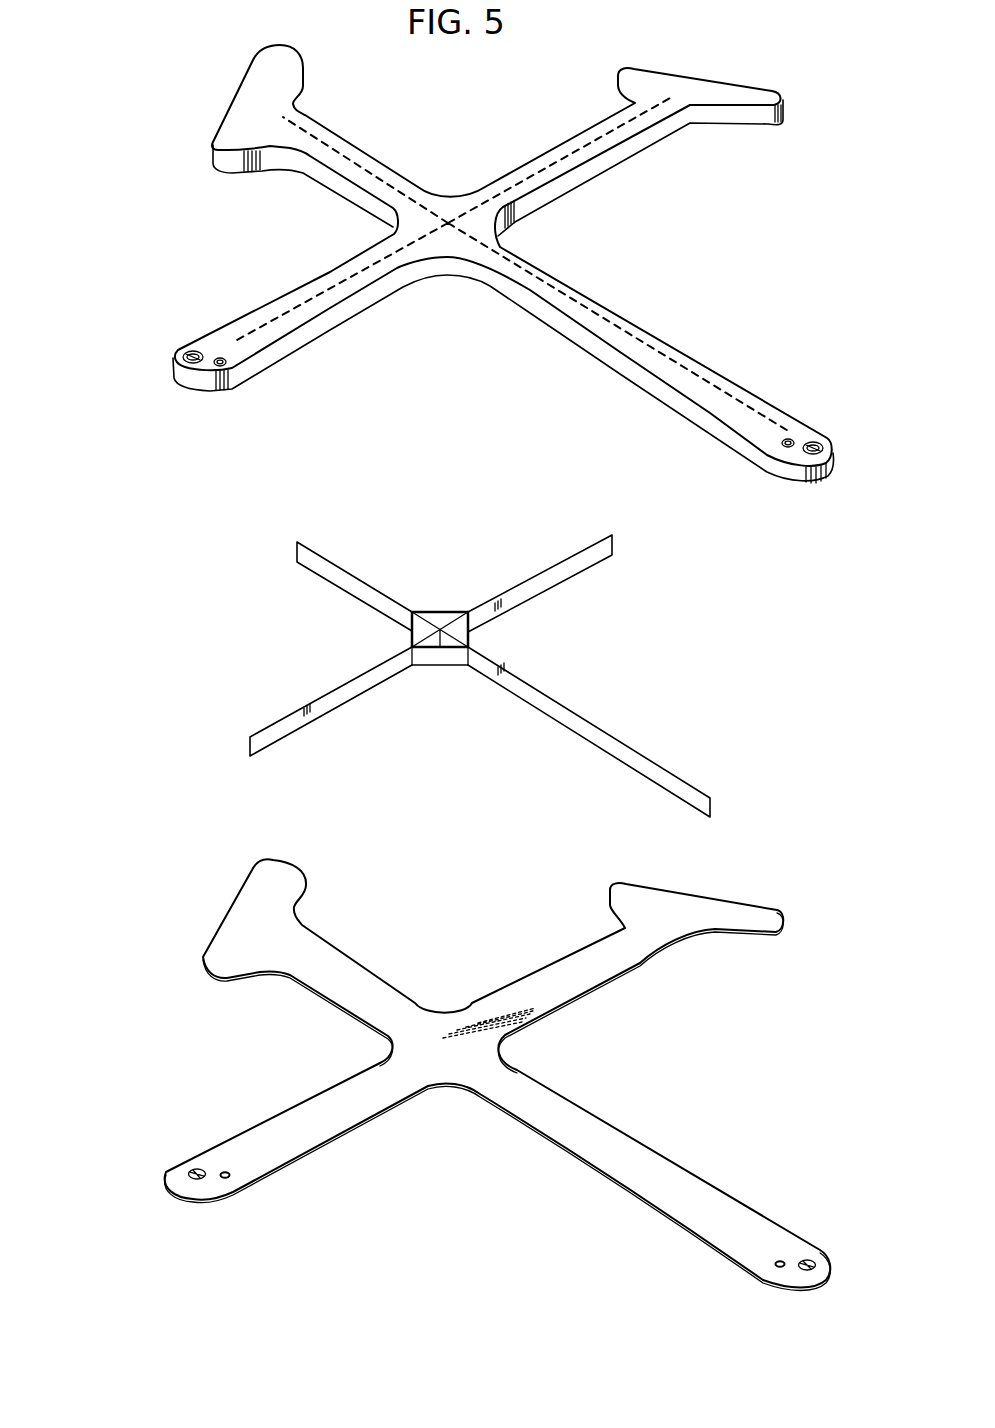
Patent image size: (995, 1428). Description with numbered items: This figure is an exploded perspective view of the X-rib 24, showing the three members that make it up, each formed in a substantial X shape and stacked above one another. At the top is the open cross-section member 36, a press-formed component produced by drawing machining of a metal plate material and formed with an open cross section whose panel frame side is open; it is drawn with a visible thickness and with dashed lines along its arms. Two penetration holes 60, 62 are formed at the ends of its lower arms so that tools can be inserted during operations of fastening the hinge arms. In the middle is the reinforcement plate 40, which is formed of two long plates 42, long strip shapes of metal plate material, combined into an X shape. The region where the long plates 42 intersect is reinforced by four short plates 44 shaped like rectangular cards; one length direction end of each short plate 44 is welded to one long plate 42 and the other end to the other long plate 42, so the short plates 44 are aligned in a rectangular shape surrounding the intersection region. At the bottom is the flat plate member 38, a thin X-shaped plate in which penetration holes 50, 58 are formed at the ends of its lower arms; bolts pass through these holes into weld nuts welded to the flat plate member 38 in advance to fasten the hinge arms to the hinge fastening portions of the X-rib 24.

The X-rib 24 is at (164, 636).
The open cross-section member 36 is at (540, 156).
The flat plate member 38 is at (535, 972).
The reinforcement plate 40 is at (644, 742).
The long plate 42 is at (336, 710).
The short plate 44 is at (445, 611).
The penetration hole 50 is at (197, 1180).
The penetration hole 58 is at (805, 1270).
The penetration hole 60 is at (192, 350).
The penetration hole 62 is at (811, 442).